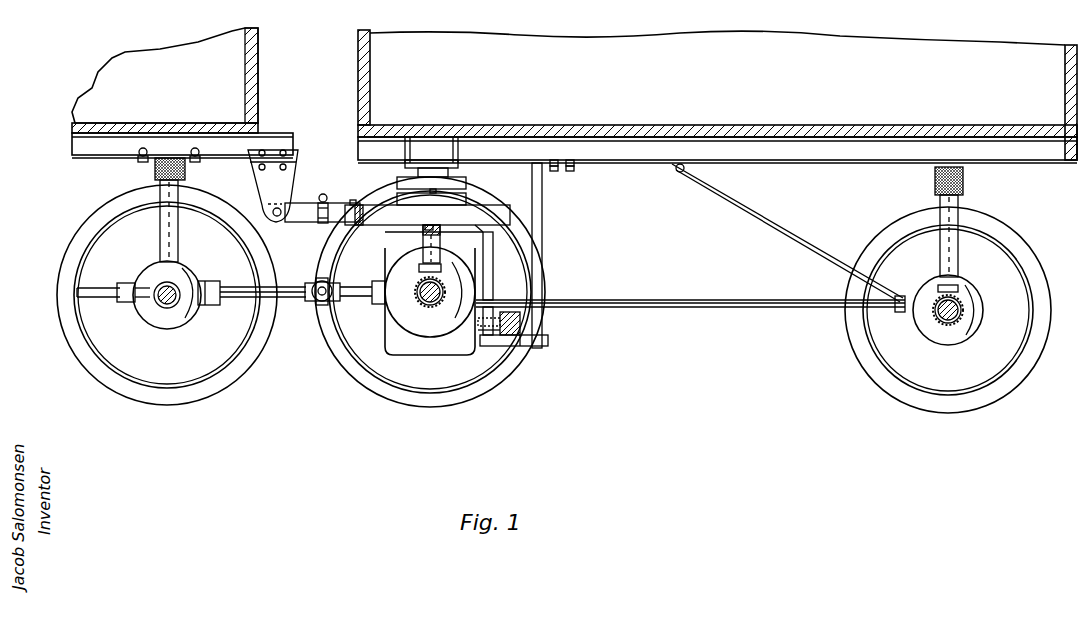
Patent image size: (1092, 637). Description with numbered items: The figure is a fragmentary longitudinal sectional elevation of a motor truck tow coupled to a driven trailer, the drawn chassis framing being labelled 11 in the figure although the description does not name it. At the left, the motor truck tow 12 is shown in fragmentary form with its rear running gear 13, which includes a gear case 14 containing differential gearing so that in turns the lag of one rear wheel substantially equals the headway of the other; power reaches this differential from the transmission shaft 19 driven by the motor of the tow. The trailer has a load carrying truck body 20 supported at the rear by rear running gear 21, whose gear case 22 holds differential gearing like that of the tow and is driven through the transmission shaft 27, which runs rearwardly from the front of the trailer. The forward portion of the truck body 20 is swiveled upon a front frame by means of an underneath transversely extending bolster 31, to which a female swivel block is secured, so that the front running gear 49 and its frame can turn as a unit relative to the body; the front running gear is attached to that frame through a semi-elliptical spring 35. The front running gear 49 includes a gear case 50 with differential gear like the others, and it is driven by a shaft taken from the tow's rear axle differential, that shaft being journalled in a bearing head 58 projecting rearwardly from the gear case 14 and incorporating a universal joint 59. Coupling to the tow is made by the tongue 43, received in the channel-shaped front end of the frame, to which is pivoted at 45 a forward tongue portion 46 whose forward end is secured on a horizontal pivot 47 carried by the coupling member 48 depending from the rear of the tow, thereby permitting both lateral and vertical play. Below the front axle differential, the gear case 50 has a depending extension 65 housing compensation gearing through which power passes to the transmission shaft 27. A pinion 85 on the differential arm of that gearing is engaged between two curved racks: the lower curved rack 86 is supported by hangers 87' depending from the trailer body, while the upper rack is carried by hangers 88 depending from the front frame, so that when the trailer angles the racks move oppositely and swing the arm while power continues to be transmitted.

The frame 11 is at (580, 165).
The motor truck tow 12 is at (165, 80).
The rear running gear 13 is at (120, 228).
The gear case 14 is at (153, 318).
The transmission shaft 19 is at (95, 305).
The truck body 20 is at (717, 95).
The rear running gear 21 is at (948, 290).
The gear case 22 is at (935, 335).
The transmission shaft 27 is at (735, 312).
The bolster 31 is at (462, 143).
The semi-elliptical spring 35 is at (420, 240).
The tongue 43 is at (345, 222).
The pivot 45 is at (338, 186).
The forward tongue portion 46 is at (308, 215).
The horizontal pivot 47 is at (272, 212).
The coupling member 48 is at (262, 183).
The front running gear 49 is at (373, 385).
The gear case 50 is at (432, 325).
The bearing head 58 is at (212, 305).
The universal joint 59 is at (318, 301).
The depending extension 65 is at (412, 352).
The pinion 85 is at (522, 333).
The curved rack 86 is at (508, 346).
The hanger 87' is at (558, 255).
The hanger 88 is at (487, 282).